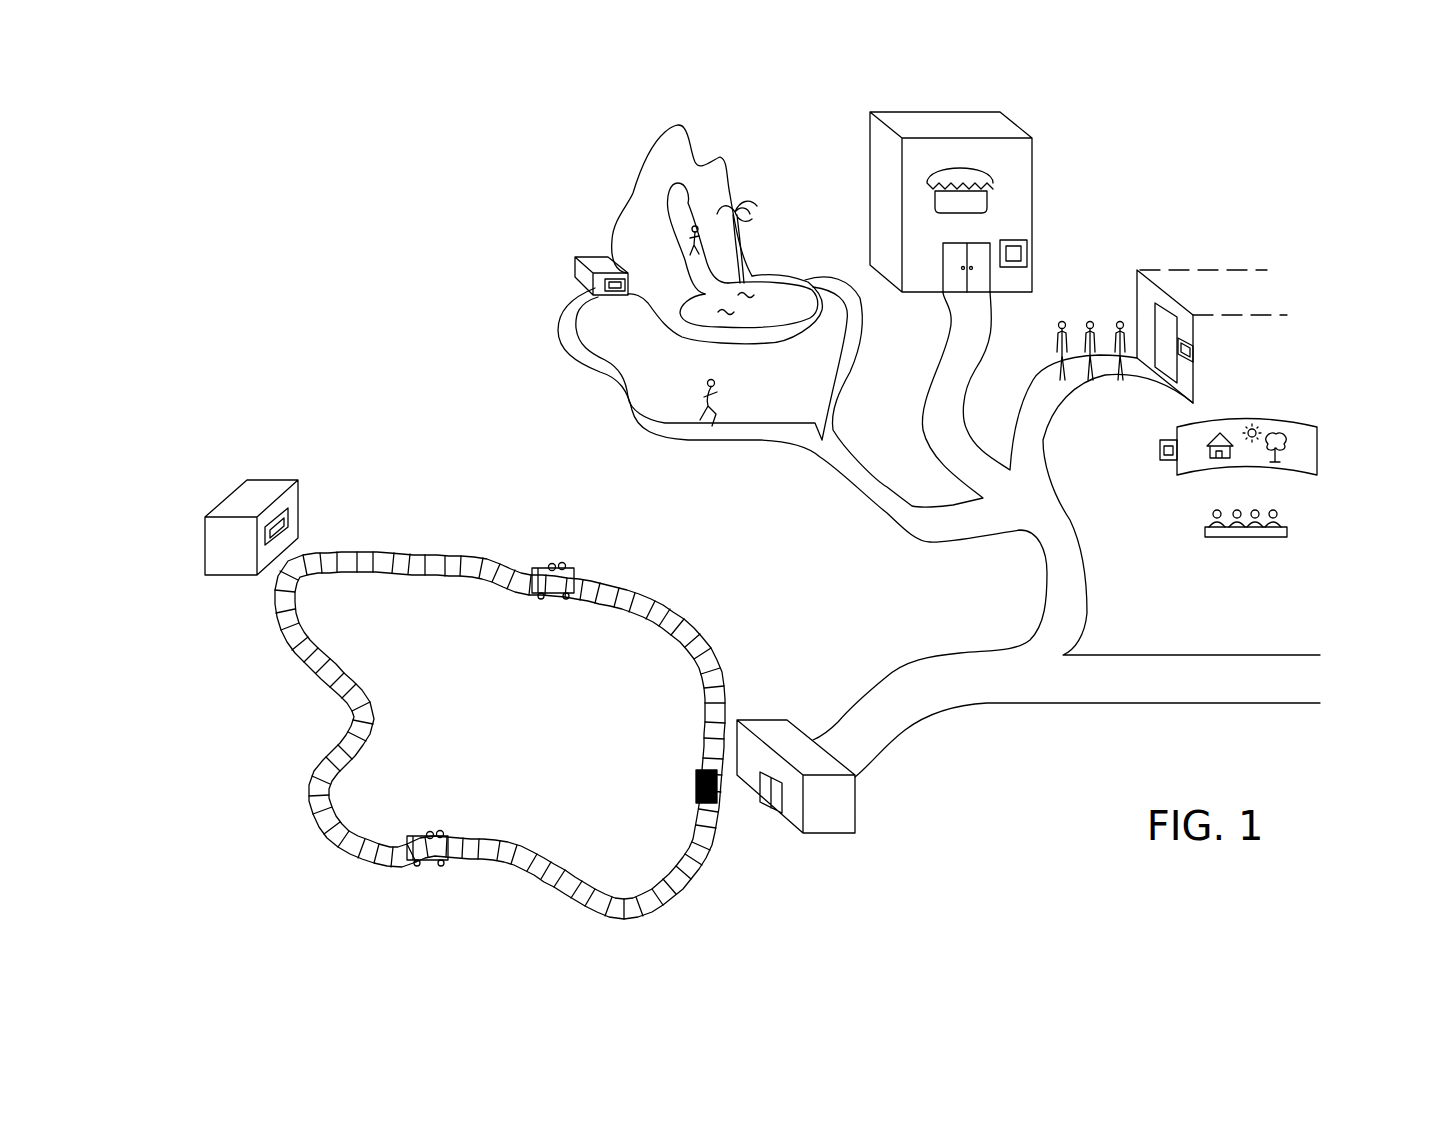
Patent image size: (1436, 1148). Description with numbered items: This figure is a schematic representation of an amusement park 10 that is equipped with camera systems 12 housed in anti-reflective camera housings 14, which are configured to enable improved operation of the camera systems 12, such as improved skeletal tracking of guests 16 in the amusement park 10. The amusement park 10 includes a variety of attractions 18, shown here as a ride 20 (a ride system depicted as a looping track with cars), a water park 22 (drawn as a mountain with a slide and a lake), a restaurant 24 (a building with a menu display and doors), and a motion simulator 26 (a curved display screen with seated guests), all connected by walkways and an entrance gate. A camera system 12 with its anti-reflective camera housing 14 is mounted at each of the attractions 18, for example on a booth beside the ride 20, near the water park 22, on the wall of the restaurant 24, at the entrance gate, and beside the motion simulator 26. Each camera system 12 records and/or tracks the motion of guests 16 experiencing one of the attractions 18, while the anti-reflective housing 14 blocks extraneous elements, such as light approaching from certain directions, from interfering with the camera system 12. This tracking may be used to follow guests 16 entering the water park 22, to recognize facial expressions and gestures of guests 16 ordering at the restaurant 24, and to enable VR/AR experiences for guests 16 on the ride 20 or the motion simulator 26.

The amusement park 10 is at (527, 460).
The camera system 12 is at (290, 522).
The anti-reflective camera housing 14 is at (280, 526).
The guests 16 is at (545, 568).
The attractions 18 is at (303, 465).
The ride 20 is at (415, 588).
The water park 22 is at (640, 185).
The restaurant 24 is at (1020, 123).
The motion simulator 26 is at (1275, 425).